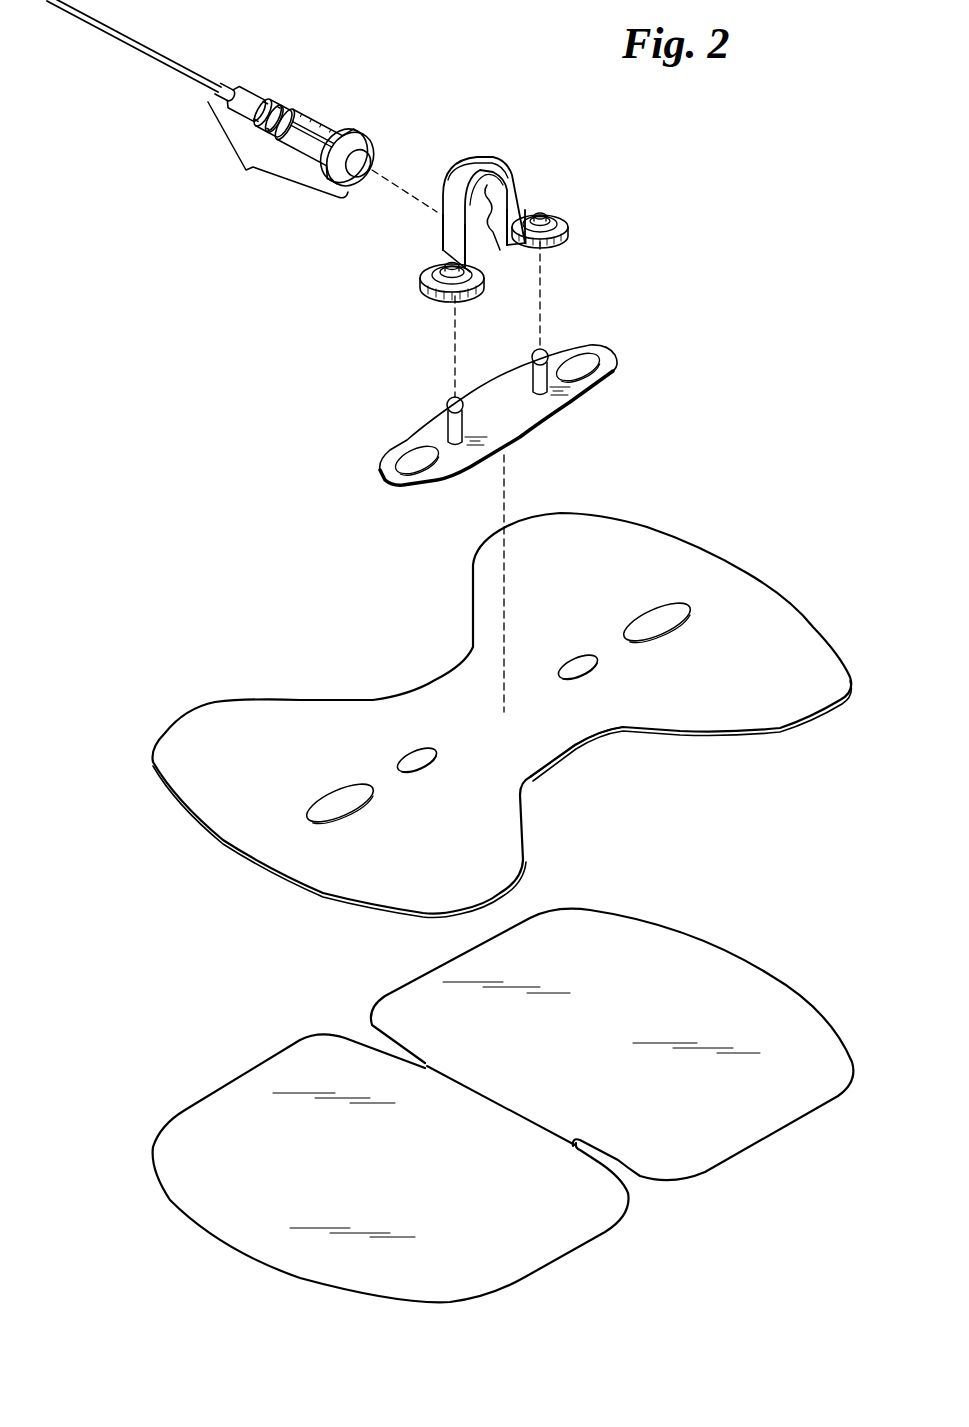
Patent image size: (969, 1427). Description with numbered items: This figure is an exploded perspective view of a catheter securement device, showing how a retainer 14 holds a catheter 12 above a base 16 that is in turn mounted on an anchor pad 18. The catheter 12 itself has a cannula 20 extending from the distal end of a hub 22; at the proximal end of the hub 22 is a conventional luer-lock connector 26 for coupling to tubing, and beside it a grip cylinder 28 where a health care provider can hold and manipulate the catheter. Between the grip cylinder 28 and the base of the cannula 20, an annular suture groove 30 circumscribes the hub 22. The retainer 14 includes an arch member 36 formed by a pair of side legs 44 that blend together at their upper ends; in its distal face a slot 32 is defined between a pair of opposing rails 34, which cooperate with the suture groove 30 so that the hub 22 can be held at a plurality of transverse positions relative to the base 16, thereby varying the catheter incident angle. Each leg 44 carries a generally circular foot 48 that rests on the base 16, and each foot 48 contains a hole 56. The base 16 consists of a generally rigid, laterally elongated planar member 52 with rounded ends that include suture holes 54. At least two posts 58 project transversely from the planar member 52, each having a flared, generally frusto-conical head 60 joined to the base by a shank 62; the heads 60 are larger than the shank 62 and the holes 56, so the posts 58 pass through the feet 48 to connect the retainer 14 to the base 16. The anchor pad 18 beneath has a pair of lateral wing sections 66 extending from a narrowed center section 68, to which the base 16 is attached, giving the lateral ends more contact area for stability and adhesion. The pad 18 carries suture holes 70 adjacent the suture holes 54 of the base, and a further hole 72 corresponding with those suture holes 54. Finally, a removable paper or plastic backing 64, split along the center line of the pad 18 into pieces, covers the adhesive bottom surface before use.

The catheter 12 is at (337, 106).
The retainer 14 is at (412, 291).
The base 16 is at (630, 388).
The anchor pad 18 is at (731, 530).
The cannula 20 is at (112, 16).
The hub 22 is at (278, 142).
The luer-lock connector 26 is at (348, 135).
The grip cylinder 28 is at (292, 108).
The annular suture groove 30 is at (268, 100).
The slot 32 is at (498, 172).
The rails 34 is at (503, 250).
The arch member 36 is at (494, 146).
The side legs 44 is at (457, 220).
The feet 48 is at (428, 307).
The planar member 52 is at (521, 424).
The suture holes 54 is at (407, 460).
The hole 56 is at (450, 267).
The posts 58 is at (430, 416).
The head 60 is at (531, 355).
The shank 62 is at (448, 447).
The backing 64 is at (700, 958).
The lateral wing sections 66 is at (245, 833).
The center section 68 is at (560, 731).
The suture holes 70 is at (333, 808).
The hole 72 is at (418, 758).